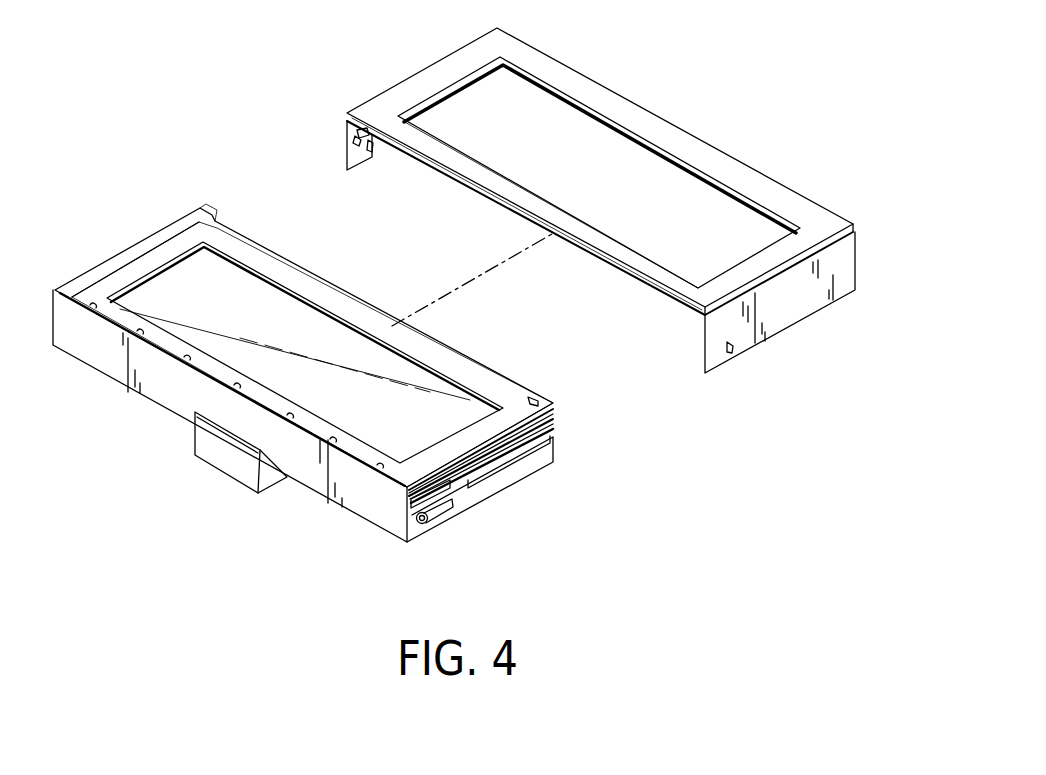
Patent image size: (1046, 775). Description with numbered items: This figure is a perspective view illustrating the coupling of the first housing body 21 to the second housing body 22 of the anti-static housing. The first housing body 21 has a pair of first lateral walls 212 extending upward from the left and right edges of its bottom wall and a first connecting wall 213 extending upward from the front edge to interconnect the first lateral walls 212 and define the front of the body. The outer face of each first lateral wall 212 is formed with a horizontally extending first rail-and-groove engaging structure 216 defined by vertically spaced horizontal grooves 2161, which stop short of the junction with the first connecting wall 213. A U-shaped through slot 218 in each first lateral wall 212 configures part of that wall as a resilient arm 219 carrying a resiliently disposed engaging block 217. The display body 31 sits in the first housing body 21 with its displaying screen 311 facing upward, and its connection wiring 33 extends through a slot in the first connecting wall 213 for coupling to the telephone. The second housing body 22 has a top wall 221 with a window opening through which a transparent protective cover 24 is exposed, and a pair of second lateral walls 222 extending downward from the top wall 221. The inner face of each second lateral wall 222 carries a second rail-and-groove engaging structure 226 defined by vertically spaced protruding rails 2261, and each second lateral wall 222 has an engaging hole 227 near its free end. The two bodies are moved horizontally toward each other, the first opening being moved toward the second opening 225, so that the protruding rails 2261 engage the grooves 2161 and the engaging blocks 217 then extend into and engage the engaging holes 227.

The first housing body 21 is at (371, 388).
The first lateral walls 212 is at (118, 258).
The first connecting wall 213 is at (170, 395).
The first rail-and-groove engaging structure 216 is at (565, 427).
The grooves 2161 is at (548, 403).
The engaging blocks 217 is at (414, 518).
The U-shaped through slot 218 is at (455, 493).
The resilient arm 219 is at (445, 502).
The second housing body 22 is at (537, 227).
The top wall 221 is at (565, 82).
The second lateral walls 222 is at (348, 160).
The second opening 225 is at (444, 198).
The second rail-and-groove engaging structure 226 is at (351, 141).
The protruding rails 2261 is at (357, 130).
The engaging holes 227 is at (371, 152).
The transparent protective cover 24 is at (690, 202).
The display body 31 is at (312, 330).
The displaying screen 311 is at (263, 313).
The connection wiring 33 is at (215, 453).